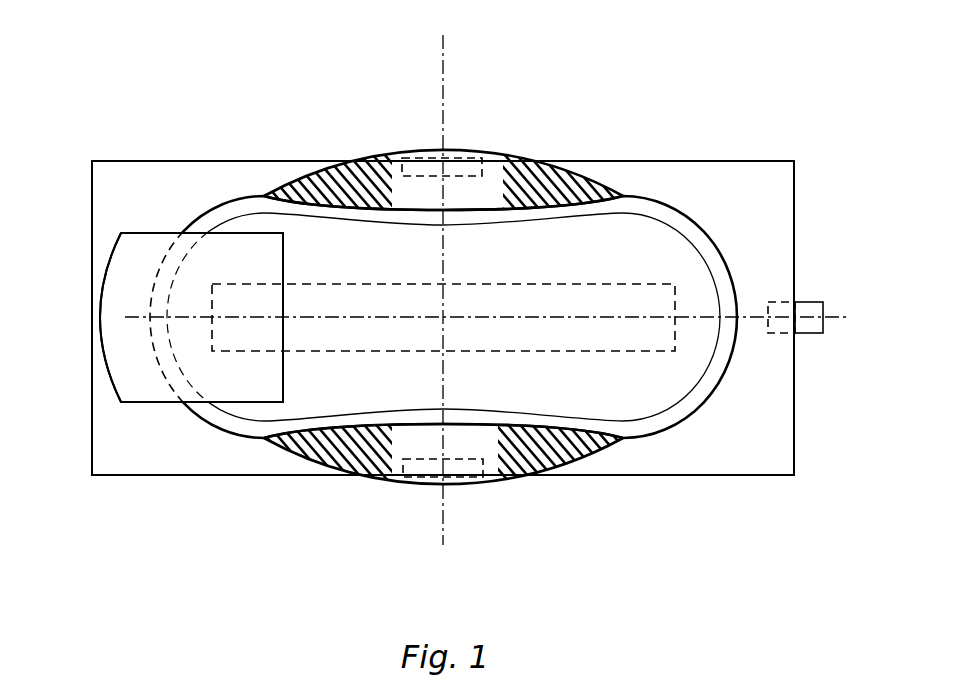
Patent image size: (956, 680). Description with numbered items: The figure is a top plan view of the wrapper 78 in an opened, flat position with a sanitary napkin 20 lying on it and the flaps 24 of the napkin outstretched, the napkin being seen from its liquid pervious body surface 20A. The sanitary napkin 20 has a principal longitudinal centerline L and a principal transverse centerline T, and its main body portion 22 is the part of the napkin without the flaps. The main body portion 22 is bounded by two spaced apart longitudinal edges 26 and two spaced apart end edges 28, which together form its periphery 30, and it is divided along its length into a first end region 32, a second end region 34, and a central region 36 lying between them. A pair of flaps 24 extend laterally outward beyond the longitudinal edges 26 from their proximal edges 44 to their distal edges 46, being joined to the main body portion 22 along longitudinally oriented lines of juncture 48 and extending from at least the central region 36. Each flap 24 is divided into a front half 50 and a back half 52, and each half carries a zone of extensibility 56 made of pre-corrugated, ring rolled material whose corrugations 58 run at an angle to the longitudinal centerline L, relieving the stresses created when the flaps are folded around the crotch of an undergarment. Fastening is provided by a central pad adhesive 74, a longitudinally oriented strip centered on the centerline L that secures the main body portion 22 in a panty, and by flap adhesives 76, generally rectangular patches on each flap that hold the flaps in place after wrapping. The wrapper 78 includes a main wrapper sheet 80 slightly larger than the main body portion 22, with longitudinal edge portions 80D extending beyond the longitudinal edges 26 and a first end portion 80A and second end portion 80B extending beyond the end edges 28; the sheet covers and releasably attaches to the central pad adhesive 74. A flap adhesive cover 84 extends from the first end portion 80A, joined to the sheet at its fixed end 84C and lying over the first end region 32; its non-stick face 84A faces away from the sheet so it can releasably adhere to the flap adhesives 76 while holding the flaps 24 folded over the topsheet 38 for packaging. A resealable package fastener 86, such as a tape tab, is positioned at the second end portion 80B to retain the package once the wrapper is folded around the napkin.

The sanitary napkin 20 is at (735, 408).
The body surface 20A is at (609, 400).
The main body portion 22 is at (747, 262).
The flaps 24 is at (410, 120).
The longitudinal edges 26 is at (468, 212).
The end edges 28 is at (150, 308).
The periphery 30 is at (665, 205).
The first end region 32 is at (247, 222).
The second end region 34 is at (672, 247).
The central region 36 is at (513, 222).
The topsheet 38 is at (705, 350).
The proximal edges 44 is at (438, 212).
The distal edges 46 is at (443, 148).
The lines of juncture 48 is at (488, 472).
The front half 50 is at (348, 132).
The back half 52 is at (537, 134).
The zones of extensibility 56 is at (316, 144).
The corrugations 58 is at (286, 180).
The central pad adhesive 74 is at (657, 284).
The flap adhesives 76 is at (450, 158).
The wrapper 78 is at (713, 490).
The main wrapper sheet 80 is at (708, 457).
The first end portion 80A is at (124, 209).
The second end portion 80B is at (741, 235).
The longitudinal edge portions 80D is at (149, 161).
The flap adhesive cover 84 is at (145, 411).
The non-stick face 84A is at (224, 269).
The fixed end 84C is at (103, 372).
The package fastener 86 is at (813, 332).
The principal longitudinal centerline L is at (841, 316).
The principal transverse centerline T is at (443, 48).